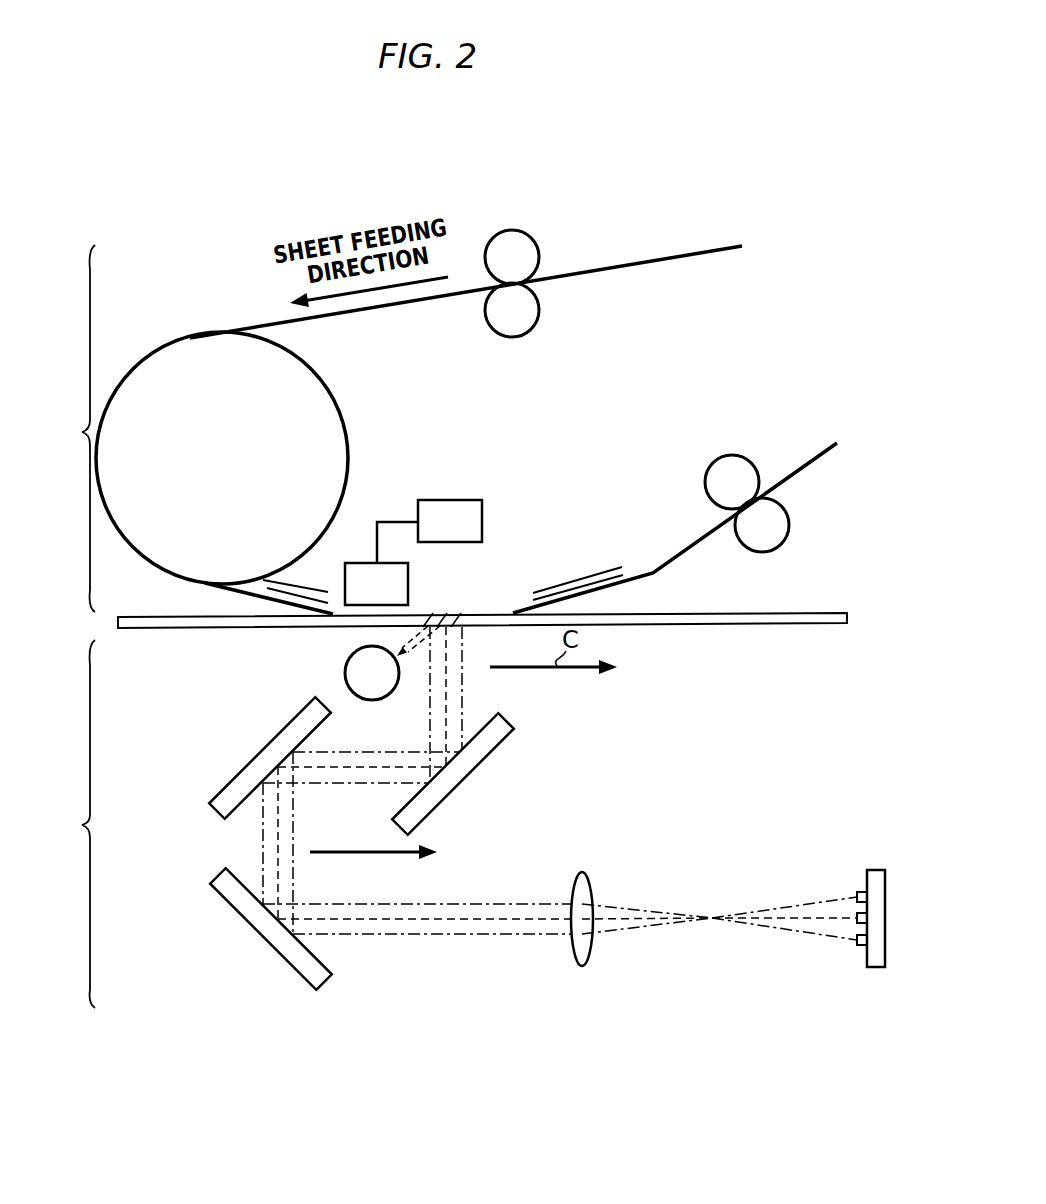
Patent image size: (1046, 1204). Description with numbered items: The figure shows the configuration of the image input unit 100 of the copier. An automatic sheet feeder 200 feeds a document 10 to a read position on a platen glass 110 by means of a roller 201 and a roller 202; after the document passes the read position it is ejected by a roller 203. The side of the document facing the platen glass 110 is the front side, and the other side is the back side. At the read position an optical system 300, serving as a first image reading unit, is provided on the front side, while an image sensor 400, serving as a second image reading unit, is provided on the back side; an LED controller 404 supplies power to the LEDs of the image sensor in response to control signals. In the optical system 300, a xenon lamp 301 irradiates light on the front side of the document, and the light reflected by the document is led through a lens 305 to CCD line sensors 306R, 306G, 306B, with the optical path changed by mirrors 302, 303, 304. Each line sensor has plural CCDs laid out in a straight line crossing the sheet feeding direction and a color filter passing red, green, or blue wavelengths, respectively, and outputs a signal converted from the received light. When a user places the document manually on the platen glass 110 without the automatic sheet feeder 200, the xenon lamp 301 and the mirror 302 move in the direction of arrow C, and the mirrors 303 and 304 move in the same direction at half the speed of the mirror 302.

The sheet (original document) 10 is at (612, 265).
The image input unit 100 is at (770, 254).
The platen glass 110 is at (807, 612).
The automatic sheet feeder 200 is at (65, 428).
The roller 201 is at (507, 247).
The roller 202 is at (323, 417).
The roller 203 is at (732, 457).
The optical system 300 is at (65, 824).
The xenon lamp 301 is at (348, 662).
The mirror 302 is at (488, 747).
The mirror 303 is at (262, 748).
The mirror 304 is at (247, 913).
The lens 305 is at (583, 872).
The CCD line sensor 306R is at (862, 892).
The CCD line sensor 306G is at (855, 917).
The CCD line sensor 306B is at (862, 945).
The image sensor 400 is at (355, 563).
The LED controller 404 is at (467, 500).